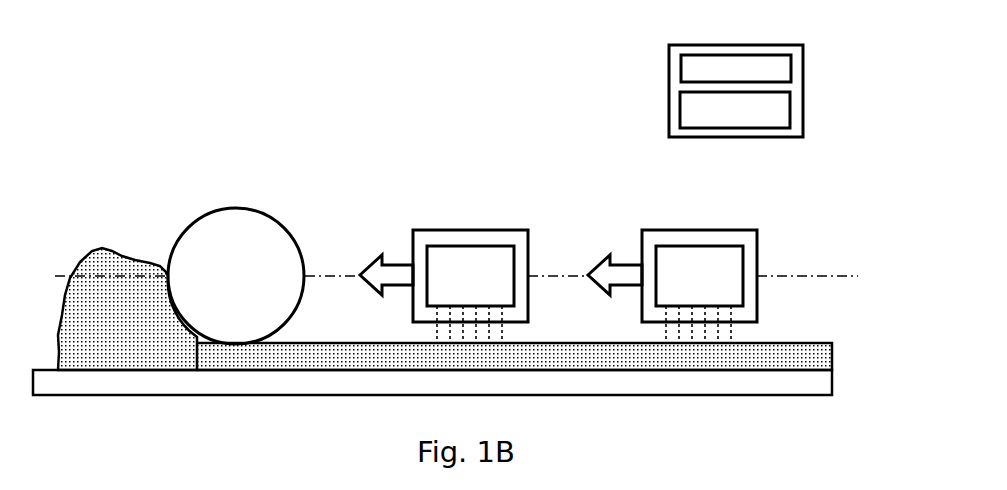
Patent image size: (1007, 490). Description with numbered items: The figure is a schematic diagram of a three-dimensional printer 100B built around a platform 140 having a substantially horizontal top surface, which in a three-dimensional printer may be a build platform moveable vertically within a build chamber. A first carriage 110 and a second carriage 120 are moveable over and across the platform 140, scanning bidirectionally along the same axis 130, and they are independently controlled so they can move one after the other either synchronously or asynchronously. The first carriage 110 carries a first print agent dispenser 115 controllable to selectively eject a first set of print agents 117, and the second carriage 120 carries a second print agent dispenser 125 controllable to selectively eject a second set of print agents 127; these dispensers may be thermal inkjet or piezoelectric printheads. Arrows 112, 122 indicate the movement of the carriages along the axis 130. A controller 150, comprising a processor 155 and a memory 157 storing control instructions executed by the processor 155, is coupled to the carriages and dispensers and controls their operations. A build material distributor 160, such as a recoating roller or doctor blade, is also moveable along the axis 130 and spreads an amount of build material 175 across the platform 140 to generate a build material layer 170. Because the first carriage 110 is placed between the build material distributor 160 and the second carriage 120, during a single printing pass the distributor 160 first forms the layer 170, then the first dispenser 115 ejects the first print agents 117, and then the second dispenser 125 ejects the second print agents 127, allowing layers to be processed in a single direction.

The 3D printer 100B is at (180, 81).
The first carriage 110 is at (512, 230).
The movement direction of first print head 112 is at (393, 259).
The first print agent dispenser 115 is at (470, 276).
The first set of print agents 117 is at (503, 340).
The second carriage 120 is at (738, 230).
The movement direction of second print head 122 is at (620, 259).
The second print agent dispenser 125 is at (699, 276).
The second set of print agents 127 is at (733, 340).
The axis 130 is at (790, 276).
The platform 140 is at (832, 382).
The controller 150 is at (737, 45).
The processor 155 is at (736, 68).
The memory 157 is at (735, 110).
The build material distributor 160 is at (234, 207).
The build material layer 170 is at (265, 357).
The build material 175 is at (133, 252).